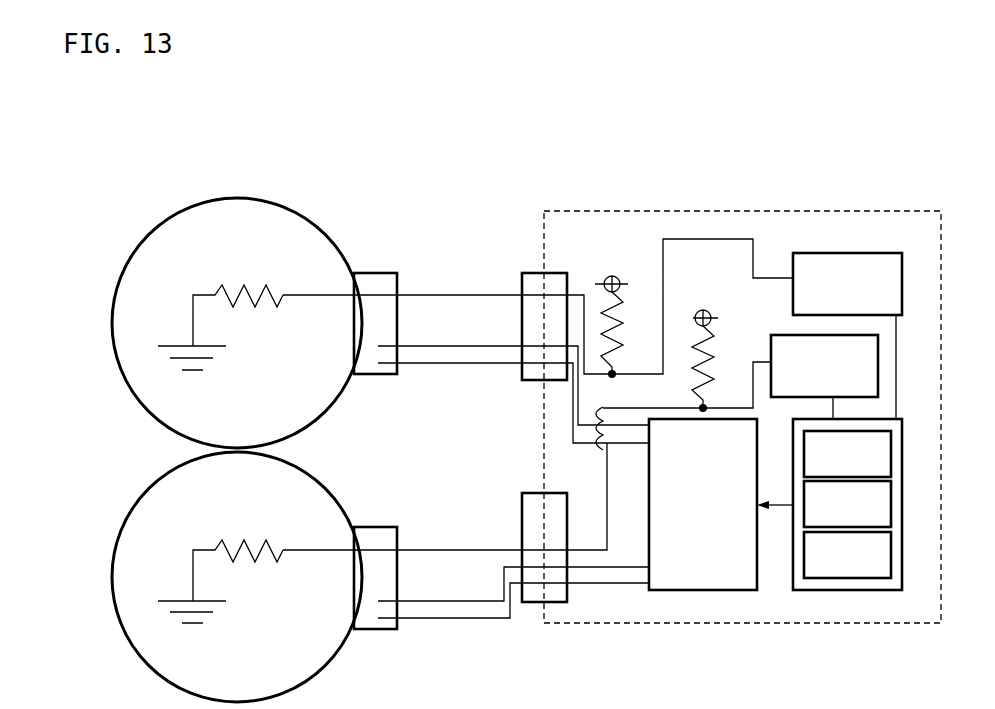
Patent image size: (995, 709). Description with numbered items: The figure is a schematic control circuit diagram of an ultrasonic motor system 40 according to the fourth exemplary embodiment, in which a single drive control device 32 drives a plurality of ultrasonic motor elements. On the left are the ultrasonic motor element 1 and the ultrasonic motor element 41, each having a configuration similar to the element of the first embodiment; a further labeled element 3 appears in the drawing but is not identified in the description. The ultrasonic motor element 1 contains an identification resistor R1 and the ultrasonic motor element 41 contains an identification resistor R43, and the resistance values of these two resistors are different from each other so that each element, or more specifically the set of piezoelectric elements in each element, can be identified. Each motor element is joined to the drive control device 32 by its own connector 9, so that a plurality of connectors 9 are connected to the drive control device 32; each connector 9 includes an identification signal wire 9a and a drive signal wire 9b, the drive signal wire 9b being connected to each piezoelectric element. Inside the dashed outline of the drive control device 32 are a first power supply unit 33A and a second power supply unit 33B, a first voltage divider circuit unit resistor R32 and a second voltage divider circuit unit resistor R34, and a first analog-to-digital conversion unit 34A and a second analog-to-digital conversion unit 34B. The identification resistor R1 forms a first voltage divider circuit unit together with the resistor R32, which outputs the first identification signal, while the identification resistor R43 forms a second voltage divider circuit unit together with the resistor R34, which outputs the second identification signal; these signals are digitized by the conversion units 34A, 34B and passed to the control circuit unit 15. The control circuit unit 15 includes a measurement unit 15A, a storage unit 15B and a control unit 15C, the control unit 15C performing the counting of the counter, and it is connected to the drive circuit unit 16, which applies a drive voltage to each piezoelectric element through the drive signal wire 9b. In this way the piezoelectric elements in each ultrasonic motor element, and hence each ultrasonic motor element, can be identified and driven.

The ultrasonic motor system 40 is at (158, 155).
The ultrasonic motor element 1 is at (185, 200).
The drum unit 3 is at (306, 222).
The ultrasonic motor element 41 is at (337, 636).
The identification resistor R1 is at (265, 285).
The identification resistor R43 is at (218, 540).
The connector 9 is at (372, 262).
The identification signal wire 9a is at (422, 295).
The drive signal wire 9b is at (462, 346).
The drive control device 32 is at (868, 203).
The first power supply unit 33A is at (612, 276).
The second power supply unit 33B is at (708, 311).
The first voltage divider circuit unit resistor R32 is at (602, 313).
The second voltage divider circuit unit resistor R34 is at (692, 347).
The first analog-to-digital conversion unit 34A is at (892, 262).
The second analog-to-digital conversion unit 34B is at (813, 342).
The drive circuit unit 16 is at (706, 578).
The control circuit unit 15 is at (879, 602).
The measurement unit 15A is at (887, 470).
The storage unit 15B is at (810, 520).
The control unit 15C is at (838, 573).